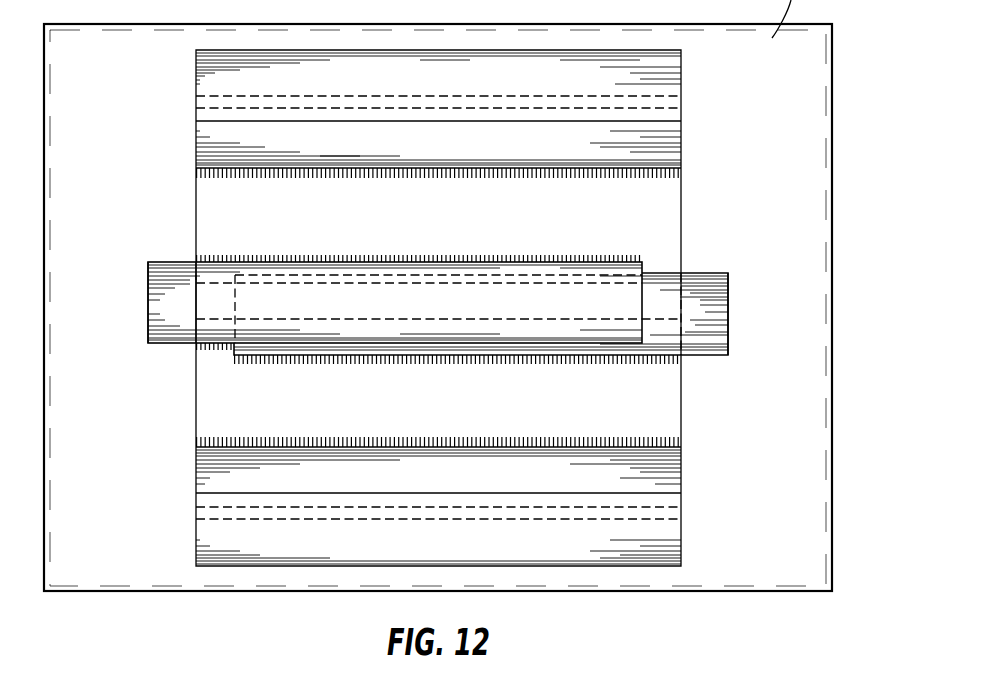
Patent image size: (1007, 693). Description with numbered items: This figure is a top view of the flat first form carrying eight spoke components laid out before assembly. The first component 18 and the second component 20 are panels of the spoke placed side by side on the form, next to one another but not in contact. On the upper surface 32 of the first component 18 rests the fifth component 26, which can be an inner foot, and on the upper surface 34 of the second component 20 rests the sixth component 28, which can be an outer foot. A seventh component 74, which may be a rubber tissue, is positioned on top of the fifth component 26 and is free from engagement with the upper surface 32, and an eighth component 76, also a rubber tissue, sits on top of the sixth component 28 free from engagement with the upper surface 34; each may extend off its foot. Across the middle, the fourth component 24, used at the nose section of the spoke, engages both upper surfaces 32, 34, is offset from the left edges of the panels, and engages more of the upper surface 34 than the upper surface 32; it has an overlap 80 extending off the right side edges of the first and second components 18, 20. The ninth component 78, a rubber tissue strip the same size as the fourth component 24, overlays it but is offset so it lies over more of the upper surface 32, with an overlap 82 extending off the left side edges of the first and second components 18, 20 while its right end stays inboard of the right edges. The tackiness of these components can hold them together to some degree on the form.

The first component 18 is at (672, 222).
The second component 20 is at (672, 397).
The fourth component 24 is at (700, 317).
The fifth component 26 is at (672, 148).
The sixth component 28 is at (672, 470).
The upper surface 32 is at (222, 220).
The upper surface 34 is at (222, 402).
The seventh component 74 is at (672, 73).
The eighth component 76 is at (672, 545).
The ninth component 78 is at (175, 307).
The overlap 80 is at (718, 290).
The overlap 82 is at (152, 277).